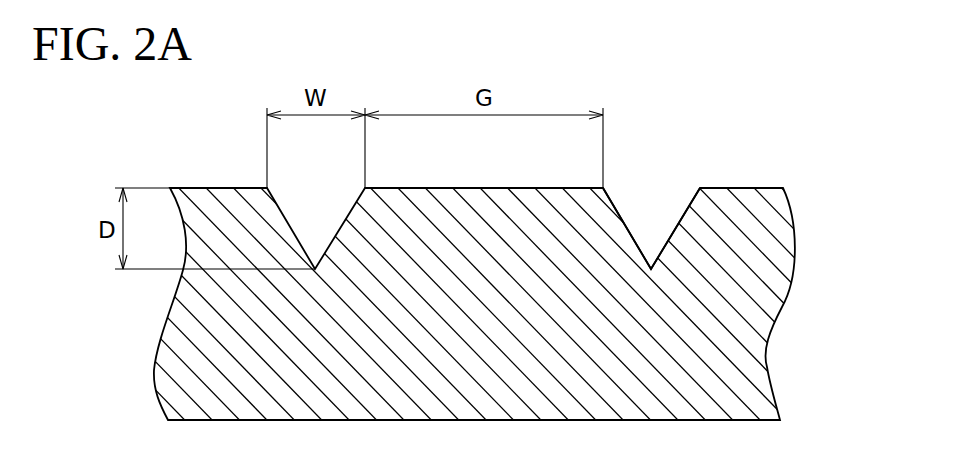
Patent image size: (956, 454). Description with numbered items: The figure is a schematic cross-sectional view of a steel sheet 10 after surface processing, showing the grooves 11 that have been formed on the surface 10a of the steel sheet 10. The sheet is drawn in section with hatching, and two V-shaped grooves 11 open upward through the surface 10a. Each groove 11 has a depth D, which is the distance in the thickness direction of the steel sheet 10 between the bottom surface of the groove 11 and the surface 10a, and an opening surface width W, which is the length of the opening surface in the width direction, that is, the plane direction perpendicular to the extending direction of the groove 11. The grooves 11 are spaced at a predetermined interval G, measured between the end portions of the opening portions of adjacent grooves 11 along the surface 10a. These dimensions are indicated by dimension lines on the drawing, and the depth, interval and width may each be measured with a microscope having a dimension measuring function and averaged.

The steel sheet 10 is at (755, 300).
The surface of the steel sheet 10a is at (740, 188).
The grooves 11 is at (668, 202).